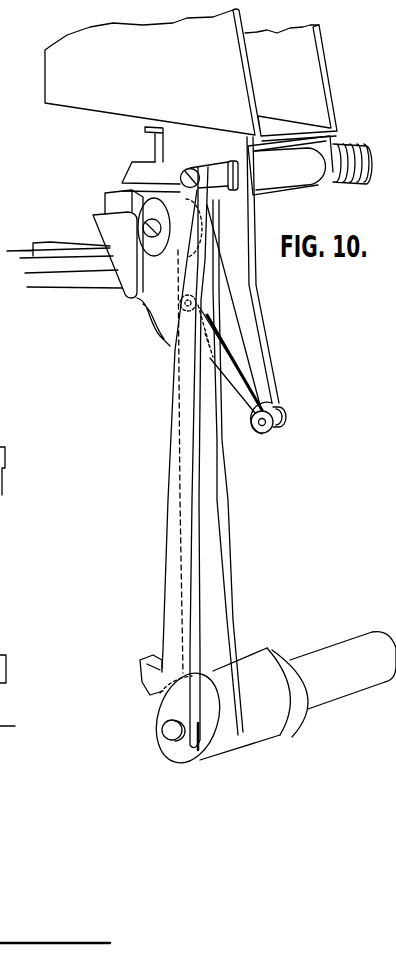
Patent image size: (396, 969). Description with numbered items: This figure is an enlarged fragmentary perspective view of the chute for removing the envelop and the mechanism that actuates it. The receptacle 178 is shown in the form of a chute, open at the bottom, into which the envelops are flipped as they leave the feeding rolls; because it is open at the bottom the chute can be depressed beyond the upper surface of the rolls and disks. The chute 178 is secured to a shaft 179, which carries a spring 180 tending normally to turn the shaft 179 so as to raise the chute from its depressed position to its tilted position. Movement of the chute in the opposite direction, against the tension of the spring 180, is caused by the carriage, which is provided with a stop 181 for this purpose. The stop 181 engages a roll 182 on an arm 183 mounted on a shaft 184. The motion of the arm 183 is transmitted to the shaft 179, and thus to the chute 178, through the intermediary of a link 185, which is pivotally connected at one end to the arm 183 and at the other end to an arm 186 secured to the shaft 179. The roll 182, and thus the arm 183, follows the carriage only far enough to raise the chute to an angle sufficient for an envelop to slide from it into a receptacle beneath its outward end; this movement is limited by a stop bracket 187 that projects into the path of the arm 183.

The receptacle 178 is at (191, 75).
The shaft 179 is at (238, 173).
The spring 180 is at (348, 181).
The stop 181 is at (75, 244).
The roll 182 is at (157, 253).
The arm 183 is at (232, 584).
The shaft 184 is at (271, 701).
The link 185 is at (254, 428).
The arm 186 is at (263, 310).
The stop bracket 187 is at (155, 653).